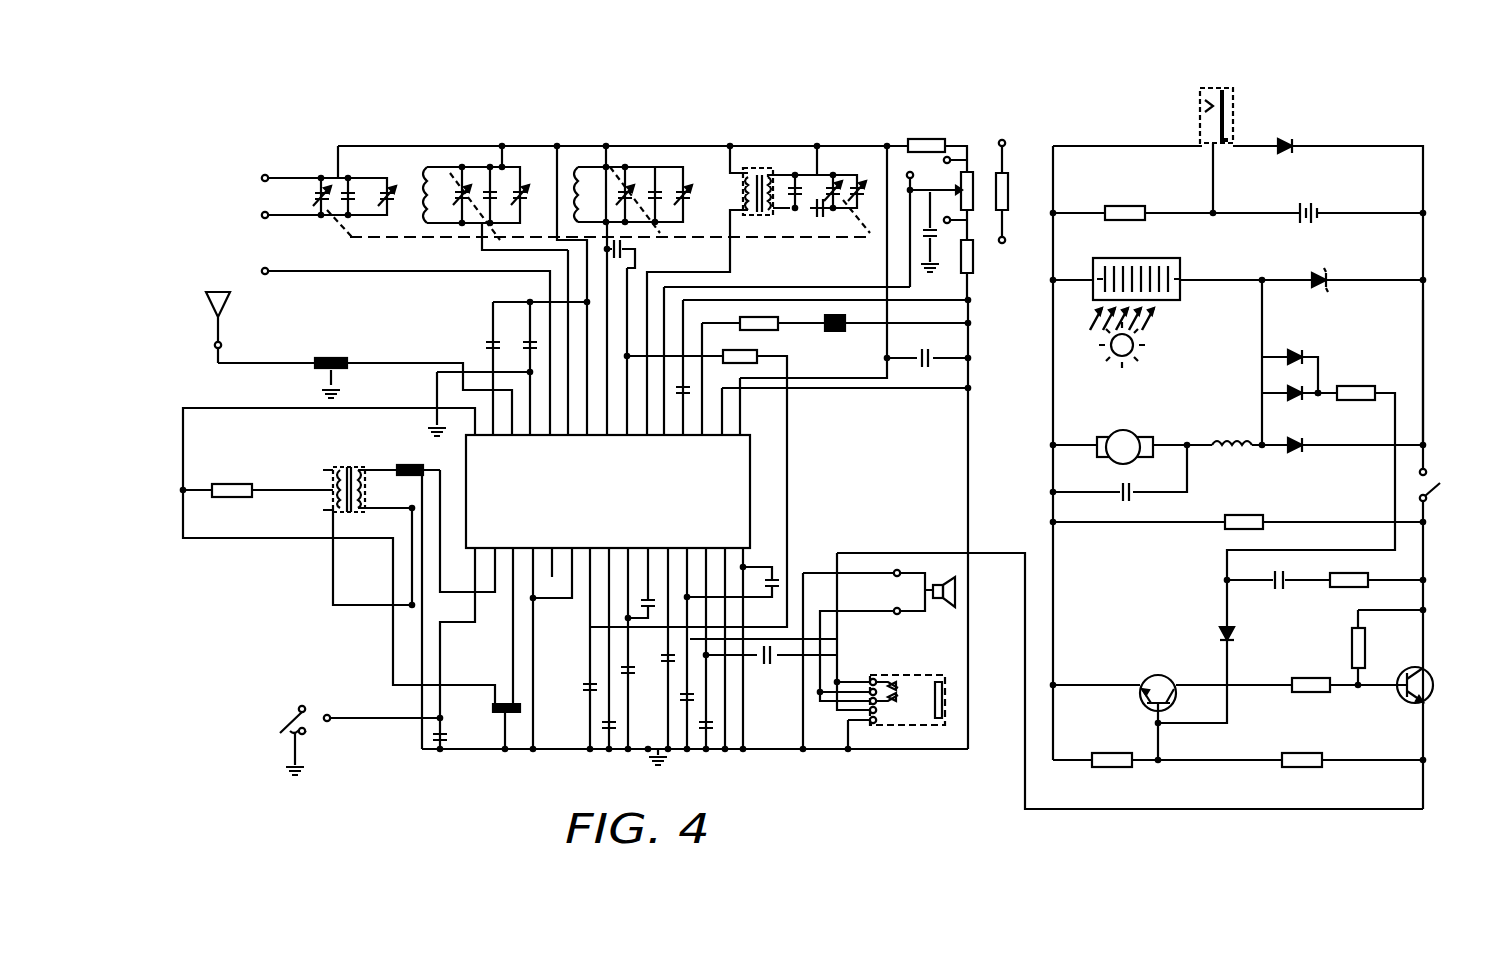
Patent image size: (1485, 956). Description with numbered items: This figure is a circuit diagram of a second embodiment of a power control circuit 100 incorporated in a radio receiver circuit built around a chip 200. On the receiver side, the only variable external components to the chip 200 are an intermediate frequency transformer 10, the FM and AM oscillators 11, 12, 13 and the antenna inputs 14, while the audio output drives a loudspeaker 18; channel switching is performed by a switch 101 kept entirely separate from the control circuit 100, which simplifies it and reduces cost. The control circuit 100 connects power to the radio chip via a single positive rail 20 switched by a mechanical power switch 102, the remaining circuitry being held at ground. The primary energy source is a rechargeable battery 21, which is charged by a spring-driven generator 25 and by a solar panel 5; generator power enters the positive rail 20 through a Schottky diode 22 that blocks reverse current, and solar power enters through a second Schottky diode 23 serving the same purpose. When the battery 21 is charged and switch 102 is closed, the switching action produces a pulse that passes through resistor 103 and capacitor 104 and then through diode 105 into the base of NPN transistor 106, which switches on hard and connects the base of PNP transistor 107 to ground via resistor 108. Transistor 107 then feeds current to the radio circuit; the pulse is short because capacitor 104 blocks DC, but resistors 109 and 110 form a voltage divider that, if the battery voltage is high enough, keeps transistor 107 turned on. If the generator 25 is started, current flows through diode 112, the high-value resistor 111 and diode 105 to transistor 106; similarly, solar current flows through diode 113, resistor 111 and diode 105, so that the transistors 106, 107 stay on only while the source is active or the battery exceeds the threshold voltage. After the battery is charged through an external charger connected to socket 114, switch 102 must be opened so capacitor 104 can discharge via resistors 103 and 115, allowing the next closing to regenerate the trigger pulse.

The solar panel 5 is at (1170, 258).
The intermediate frequency transformer 10 is at (350, 467).
The FM and AM oscillator 11 is at (433, 160).
The FM and AM oscillator 12 is at (630, 167).
The FM and AM oscillator 13 is at (772, 157).
The antenna inputs 14 is at (213, 317).
The loudspeaker 18 is at (943, 607).
The positive rail 20 is at (1438, 400).
The rechargeable battery 21 is at (1313, 207).
The Schottky diode 22 is at (1293, 452).
The second Schottky diode 23 is at (1323, 278).
The generator 25 is at (1120, 437).
The power control circuit 100 is at (1292, 155).
The switch 101 is at (278, 733).
The mechanical power switch 102 is at (1440, 485).
The resistor 103 is at (1345, 590).
The capacitor 104 is at (1273, 585).
The diode 105 is at (1217, 630).
The NPN transistor 106 is at (1142, 707).
The PNP transistor 107 is at (1402, 702).
The resistor 108 is at (1317, 695).
The resistor 109 is at (1305, 770).
The resistor 110 is at (1112, 770).
The resistor 111 is at (1318, 392).
The diode 112 is at (1287, 392).
The diode 113 is at (1288, 348).
The socket 114 is at (1207, 103).
The resistor 115 is at (1227, 532).
The chip 200 is at (636, 507).